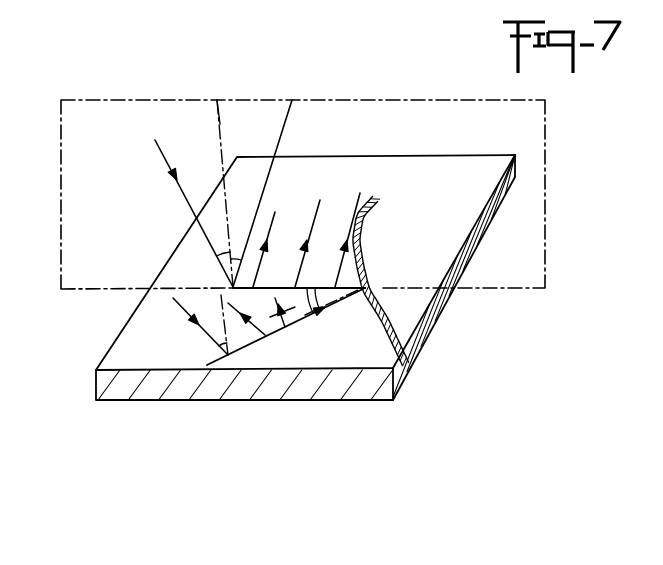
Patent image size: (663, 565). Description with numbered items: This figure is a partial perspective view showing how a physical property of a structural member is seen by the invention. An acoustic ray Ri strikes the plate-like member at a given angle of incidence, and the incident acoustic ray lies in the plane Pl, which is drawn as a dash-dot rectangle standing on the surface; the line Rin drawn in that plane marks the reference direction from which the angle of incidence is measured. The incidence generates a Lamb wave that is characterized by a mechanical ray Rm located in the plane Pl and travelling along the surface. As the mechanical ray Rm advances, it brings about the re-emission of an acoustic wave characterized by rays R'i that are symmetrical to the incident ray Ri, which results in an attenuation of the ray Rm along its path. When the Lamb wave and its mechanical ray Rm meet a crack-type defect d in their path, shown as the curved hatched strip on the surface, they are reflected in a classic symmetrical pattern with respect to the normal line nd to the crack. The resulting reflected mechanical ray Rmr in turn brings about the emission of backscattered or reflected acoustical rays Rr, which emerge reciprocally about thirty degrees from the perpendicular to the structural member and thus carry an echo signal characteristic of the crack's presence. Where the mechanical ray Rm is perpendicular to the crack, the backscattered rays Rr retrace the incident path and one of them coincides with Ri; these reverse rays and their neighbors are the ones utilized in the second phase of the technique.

The plane of the incident acoustic ray Pl is at (80, 240).
The incident acoustic ray Ri is at (164, 152).
The normal to reflecting surface Rin is at (222, 122).
The re-emitted acoustic rays R'i is at (295, 193).
The mechanical ray Rm is at (325, 282).
The backscattered acoustical rays Rr is at (199, 328).
The reflected mechanical ray Rmr is at (244, 346).
The normal line to the crack nd is at (288, 326).
The crack-type defect d is at (396, 313).